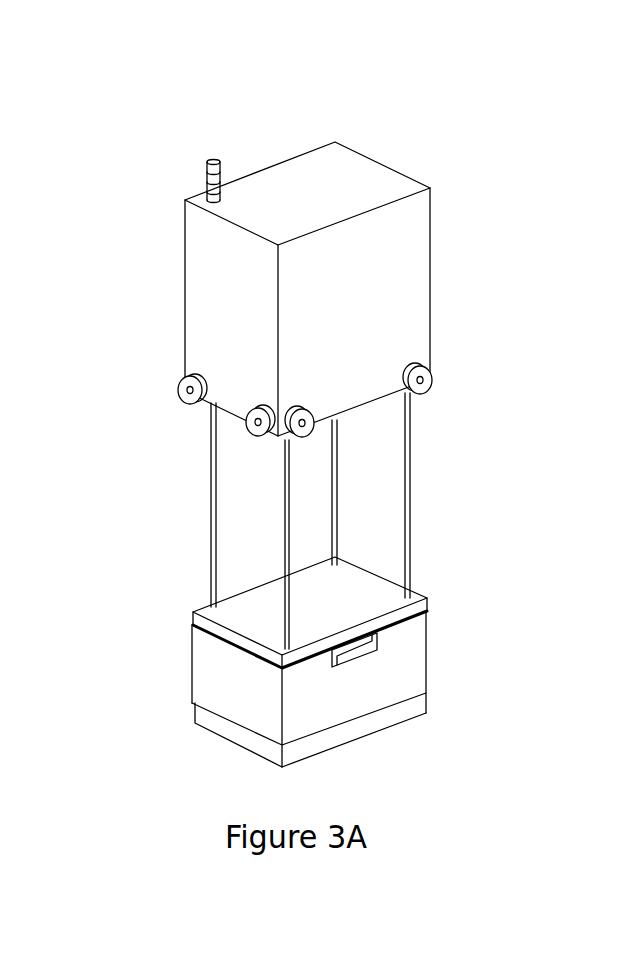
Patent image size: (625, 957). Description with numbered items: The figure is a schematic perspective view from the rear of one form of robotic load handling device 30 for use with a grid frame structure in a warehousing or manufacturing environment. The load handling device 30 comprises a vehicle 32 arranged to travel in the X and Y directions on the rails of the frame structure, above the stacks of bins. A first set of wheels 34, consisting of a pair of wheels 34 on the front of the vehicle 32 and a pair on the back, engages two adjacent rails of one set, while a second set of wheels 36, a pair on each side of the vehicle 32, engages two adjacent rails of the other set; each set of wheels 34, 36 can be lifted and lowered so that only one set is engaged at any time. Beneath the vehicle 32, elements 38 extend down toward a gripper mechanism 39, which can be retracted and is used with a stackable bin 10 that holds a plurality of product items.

The load handling device 30 is at (160, 105).
The vehicle 32 is at (373, 270).
The first set of wheels 34 is at (427, 383).
The second set of wheels 36 is at (193, 378).
The guide rod 38 is at (408, 497).
The gripper mechanism 39 is at (373, 600).
The bin 10 is at (400, 682).